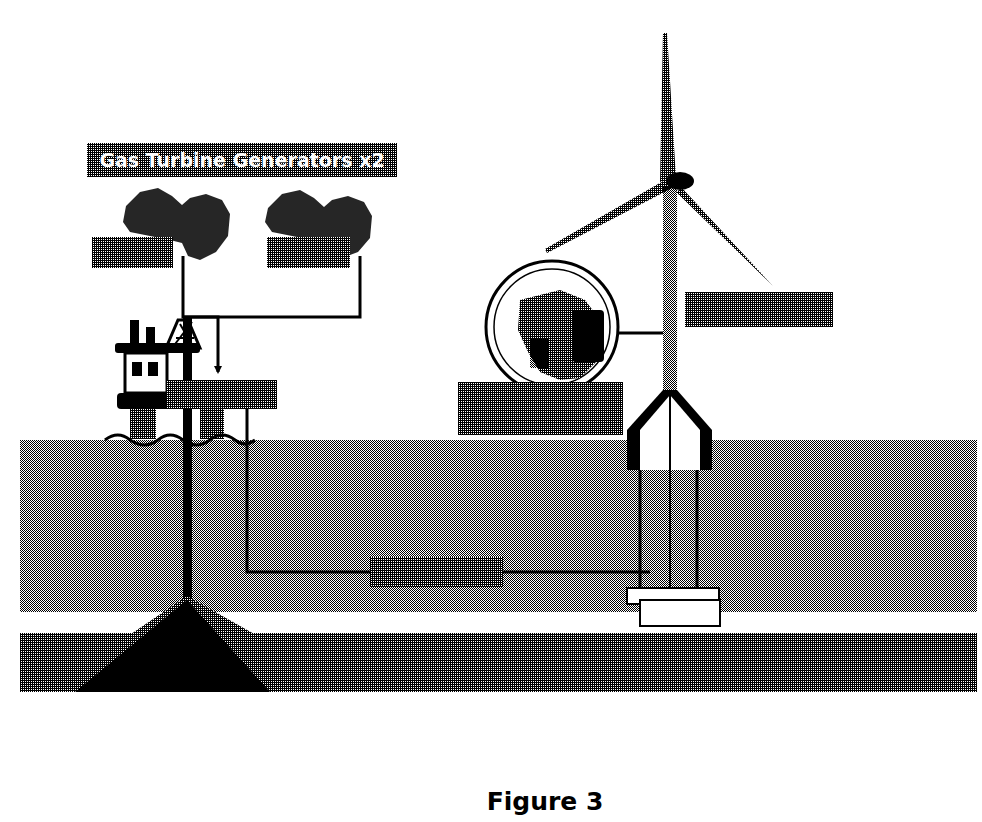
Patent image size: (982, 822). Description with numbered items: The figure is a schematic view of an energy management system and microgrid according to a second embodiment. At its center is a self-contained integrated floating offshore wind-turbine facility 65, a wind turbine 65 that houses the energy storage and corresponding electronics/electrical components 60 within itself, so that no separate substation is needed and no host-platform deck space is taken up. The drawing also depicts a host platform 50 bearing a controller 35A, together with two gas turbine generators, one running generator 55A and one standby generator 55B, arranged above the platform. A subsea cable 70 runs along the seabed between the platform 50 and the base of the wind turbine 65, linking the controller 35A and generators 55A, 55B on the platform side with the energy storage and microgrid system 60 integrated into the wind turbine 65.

The running gas turbine generator 55A is at (135, 228).
The standby gas turbine generator 55B is at (343, 229).
The offshore platform 50 is at (170, 382).
The controller 35A is at (245, 394).
The energy storage and corresponding electronics/electrical components 60 is at (554, 348).
The self-contained integrated floating offshore wind-turbine facility 65 is at (708, 329).
The subsea cable 70 is at (448, 498).